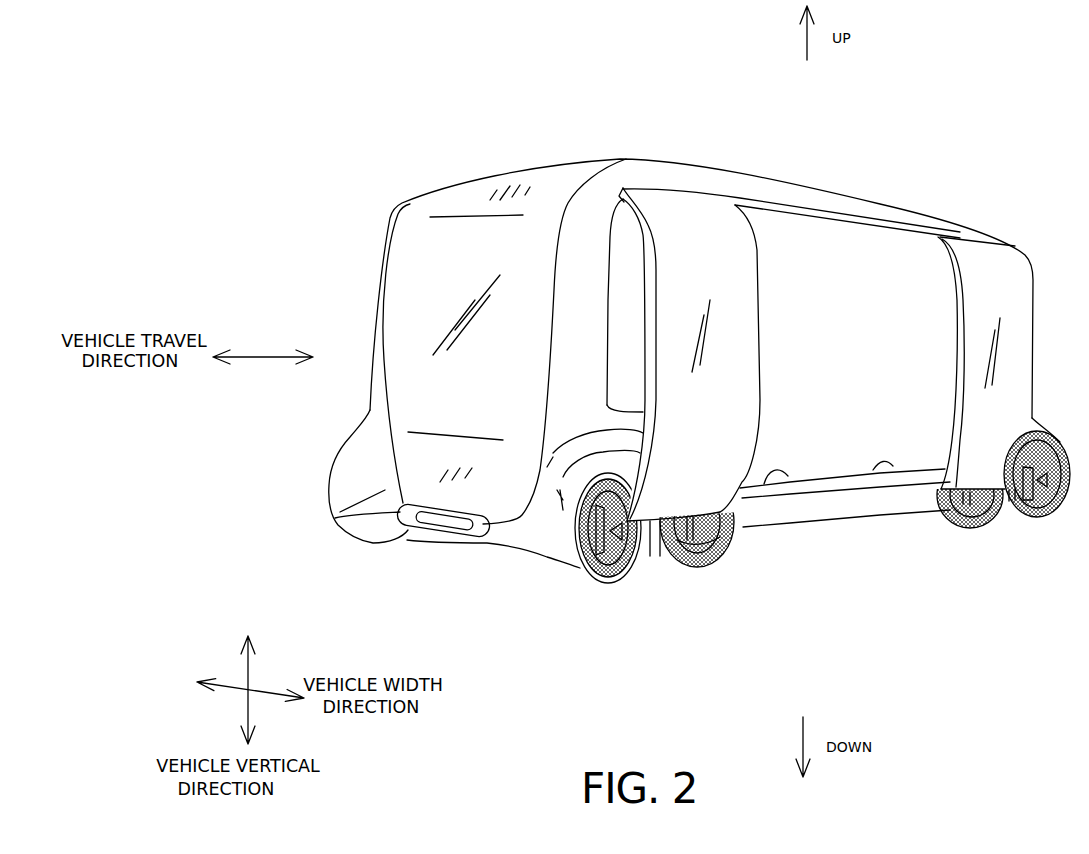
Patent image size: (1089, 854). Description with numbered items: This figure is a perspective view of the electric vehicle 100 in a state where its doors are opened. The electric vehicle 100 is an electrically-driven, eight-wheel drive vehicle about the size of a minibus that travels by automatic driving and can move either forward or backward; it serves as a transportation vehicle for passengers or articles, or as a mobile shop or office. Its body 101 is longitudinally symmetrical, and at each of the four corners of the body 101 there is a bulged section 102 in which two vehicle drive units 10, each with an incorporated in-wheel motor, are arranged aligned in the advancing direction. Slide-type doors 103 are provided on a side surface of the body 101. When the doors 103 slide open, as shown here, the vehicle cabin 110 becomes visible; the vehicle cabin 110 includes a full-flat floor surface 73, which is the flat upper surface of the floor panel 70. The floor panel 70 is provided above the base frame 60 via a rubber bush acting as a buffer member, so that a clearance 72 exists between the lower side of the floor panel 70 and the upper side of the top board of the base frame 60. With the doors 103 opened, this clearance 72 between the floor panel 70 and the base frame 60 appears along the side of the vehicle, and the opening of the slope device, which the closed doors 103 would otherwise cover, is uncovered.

The electric vehicle 100 is at (278, 110).
The slide-type doors 103 is at (680, 234).
The vehicle cabin 110 is at (853, 356).
The body 101 is at (476, 559).
The bulged section 102 is at (537, 504).
The vehicle drive unit 10 is at (637, 592).
The floor surface 73 is at (766, 478).
The floor panel 70 is at (900, 478).
The clearance 72 is at (840, 500).
The base frame 60 is at (808, 505).